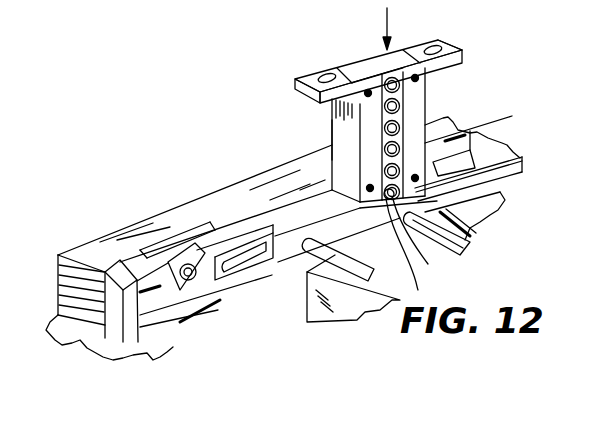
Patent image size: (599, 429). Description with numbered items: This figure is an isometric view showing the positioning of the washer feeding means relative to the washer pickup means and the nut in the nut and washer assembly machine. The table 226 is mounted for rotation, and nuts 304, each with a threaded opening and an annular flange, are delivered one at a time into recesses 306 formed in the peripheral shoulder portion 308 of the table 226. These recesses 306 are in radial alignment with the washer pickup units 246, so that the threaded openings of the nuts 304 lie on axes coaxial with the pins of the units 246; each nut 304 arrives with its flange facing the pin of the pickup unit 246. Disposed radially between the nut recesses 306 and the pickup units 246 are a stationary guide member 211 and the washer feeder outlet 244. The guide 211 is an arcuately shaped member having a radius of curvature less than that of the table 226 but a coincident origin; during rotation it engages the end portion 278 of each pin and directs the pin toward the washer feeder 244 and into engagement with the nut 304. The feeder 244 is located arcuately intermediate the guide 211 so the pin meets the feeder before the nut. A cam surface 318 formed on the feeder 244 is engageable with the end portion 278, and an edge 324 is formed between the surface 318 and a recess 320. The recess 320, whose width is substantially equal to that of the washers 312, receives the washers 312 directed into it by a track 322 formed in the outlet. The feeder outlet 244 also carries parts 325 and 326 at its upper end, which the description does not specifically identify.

The washer 312 is at (385, 70).
The track 322 is at (385, 72).
The left pad of cross plate 325 is at (296, 85).
The right pad of cross plate 326 is at (455, 46).
The washer feeder outlet 244 is at (322, 138).
The recess 306 is at (326, 185).
The cam surface 318 is at (280, 235).
The guide member 211 is at (250, 262).
The end portion 278 is at (303, 254).
The nut 304 is at (188, 290).
The washer pickup unit 246 is at (335, 302).
The table 226 is at (138, 334).
The peripheral shoulder portion 308 is at (271, 238).
The recess 320 is at (418, 248).
The edge 324 is at (420, 249).